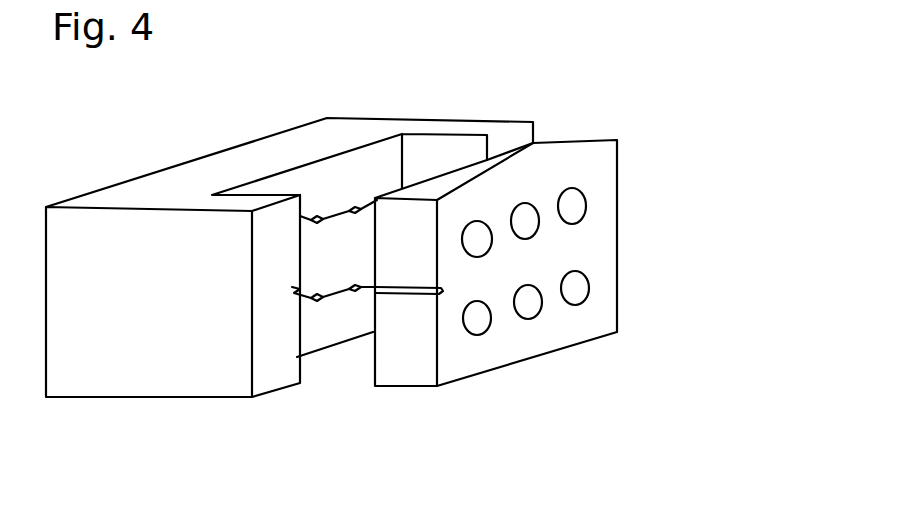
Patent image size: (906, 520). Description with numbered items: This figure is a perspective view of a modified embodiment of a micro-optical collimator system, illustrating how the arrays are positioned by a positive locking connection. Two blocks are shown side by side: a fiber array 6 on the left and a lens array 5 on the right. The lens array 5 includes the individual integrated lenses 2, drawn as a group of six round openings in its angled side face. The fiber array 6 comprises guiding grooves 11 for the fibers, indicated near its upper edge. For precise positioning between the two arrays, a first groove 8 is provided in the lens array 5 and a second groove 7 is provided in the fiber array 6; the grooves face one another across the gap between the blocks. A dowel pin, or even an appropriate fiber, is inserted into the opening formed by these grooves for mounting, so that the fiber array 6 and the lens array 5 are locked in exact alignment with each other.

The integrated lenses 2 is at (572, 206).
The lens array 5 is at (563, 326).
The fiber array 6 is at (125, 378).
The second groove 7 is at (320, 303).
The first groove 8 is at (397, 293).
The guiding grooves 11 is at (303, 219).